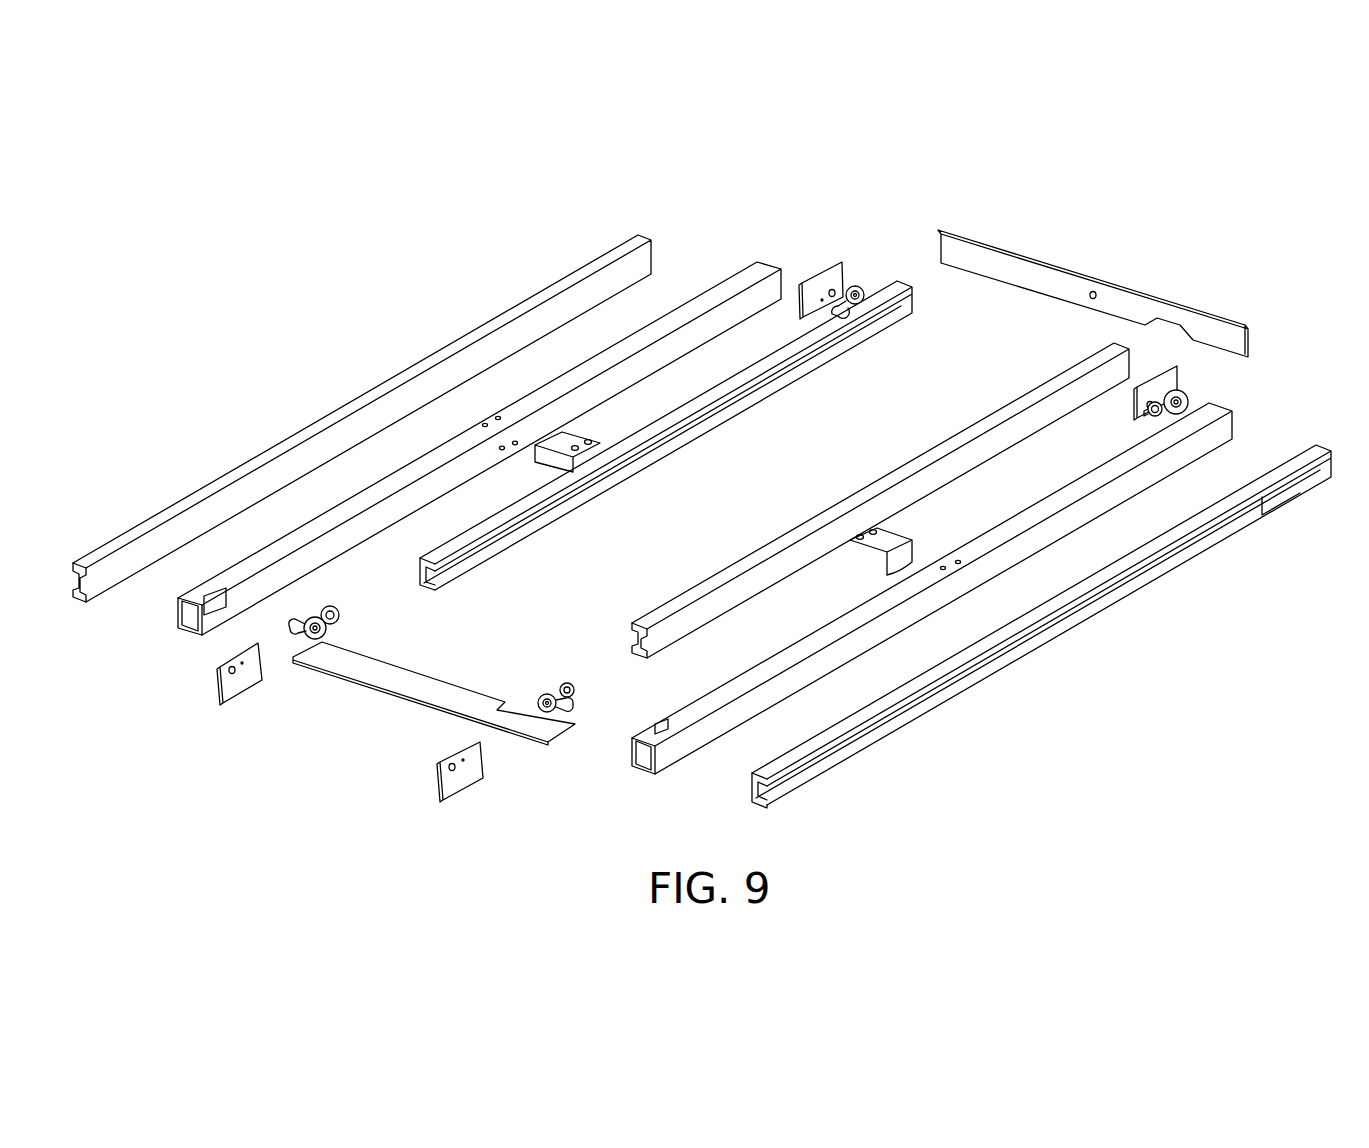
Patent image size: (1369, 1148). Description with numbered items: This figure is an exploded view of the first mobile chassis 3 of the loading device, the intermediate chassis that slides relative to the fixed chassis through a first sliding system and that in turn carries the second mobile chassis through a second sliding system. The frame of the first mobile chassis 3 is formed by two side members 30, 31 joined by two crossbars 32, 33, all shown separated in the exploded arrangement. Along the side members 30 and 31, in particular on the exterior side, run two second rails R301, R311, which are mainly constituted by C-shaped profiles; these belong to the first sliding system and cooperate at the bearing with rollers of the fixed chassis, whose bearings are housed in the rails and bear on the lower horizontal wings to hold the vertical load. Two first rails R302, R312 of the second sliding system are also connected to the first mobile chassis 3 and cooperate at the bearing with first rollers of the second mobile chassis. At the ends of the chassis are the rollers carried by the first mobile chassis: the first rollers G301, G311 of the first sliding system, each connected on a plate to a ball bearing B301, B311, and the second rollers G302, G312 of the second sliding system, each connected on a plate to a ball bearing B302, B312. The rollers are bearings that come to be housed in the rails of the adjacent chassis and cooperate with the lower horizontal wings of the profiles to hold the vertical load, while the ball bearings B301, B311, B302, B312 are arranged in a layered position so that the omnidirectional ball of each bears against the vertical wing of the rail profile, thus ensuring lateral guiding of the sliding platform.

The first mobile chassis 3 is at (880, 165).
The side member 30 is at (733, 288).
The side member 31 is at (727, 713).
The crossbar 32 is at (390, 662).
The crossbar 33 is at (1070, 288).
The second rail R301 is at (388, 398).
The first rail R302 is at (535, 512).
The second rail R311 is at (1007, 655).
The first rail R312 is at (730, 575).
The first roller G301 is at (297, 635).
The second roller G302 is at (858, 292).
The first roller G311 is at (538, 717).
The second roller G312 is at (1182, 396).
The ball bearing B301 is at (337, 610).
The ball bearing B302 is at (835, 308).
The ball bearing B311 is at (563, 685).
The ball bearing B312 is at (1166, 412).